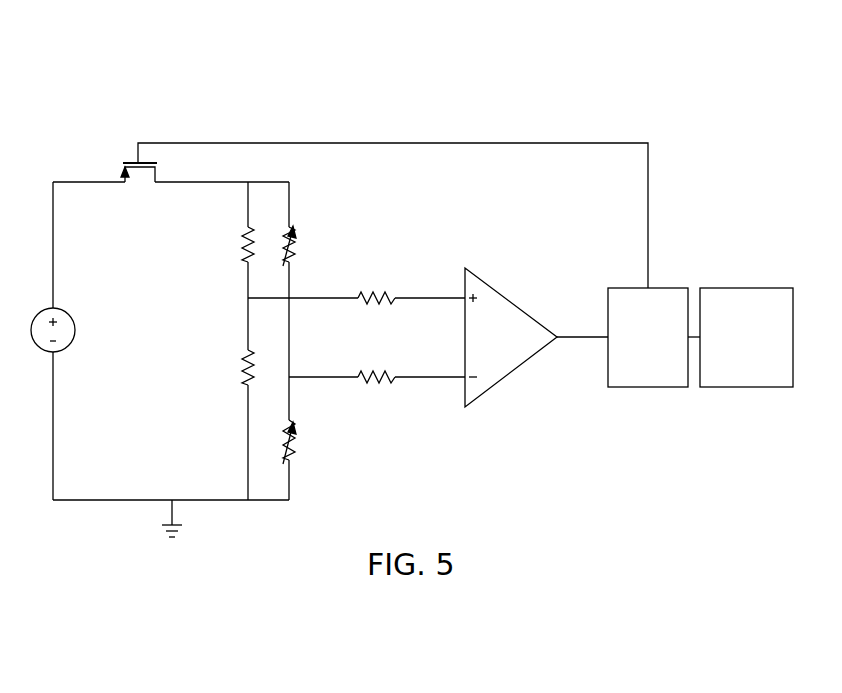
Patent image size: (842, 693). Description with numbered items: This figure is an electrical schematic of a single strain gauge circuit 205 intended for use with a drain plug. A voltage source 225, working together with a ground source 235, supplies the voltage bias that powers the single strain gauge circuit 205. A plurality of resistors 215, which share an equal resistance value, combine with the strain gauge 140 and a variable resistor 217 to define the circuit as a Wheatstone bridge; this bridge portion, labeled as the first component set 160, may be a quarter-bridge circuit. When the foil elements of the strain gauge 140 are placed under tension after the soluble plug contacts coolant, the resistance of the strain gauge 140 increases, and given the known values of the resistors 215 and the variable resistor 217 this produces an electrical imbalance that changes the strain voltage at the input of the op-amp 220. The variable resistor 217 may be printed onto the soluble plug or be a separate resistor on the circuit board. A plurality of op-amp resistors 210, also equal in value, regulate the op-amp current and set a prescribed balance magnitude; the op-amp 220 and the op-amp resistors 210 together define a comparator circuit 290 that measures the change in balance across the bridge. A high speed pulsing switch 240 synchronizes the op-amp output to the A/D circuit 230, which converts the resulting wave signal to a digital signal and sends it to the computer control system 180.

The single strain gauge circuit 205 is at (695, 58).
The high speed pulsing switch 240 is at (131, 160).
The first component set 160 is at (258, 403).
The plurality of resistors 215 is at (244, 230).
The variable resistor 217 is at (292, 236).
The strain gauge 140 is at (290, 432).
The voltage source 225 is at (75, 330).
The ground source 235 is at (175, 514).
The op-amp resistors 210 is at (392, 292).
The operational amplifier 220 is at (515, 300).
The comparator circuit 290 is at (484, 463).
The A/D circuit 230 is at (664, 286).
The computer control system 180 is at (750, 286).